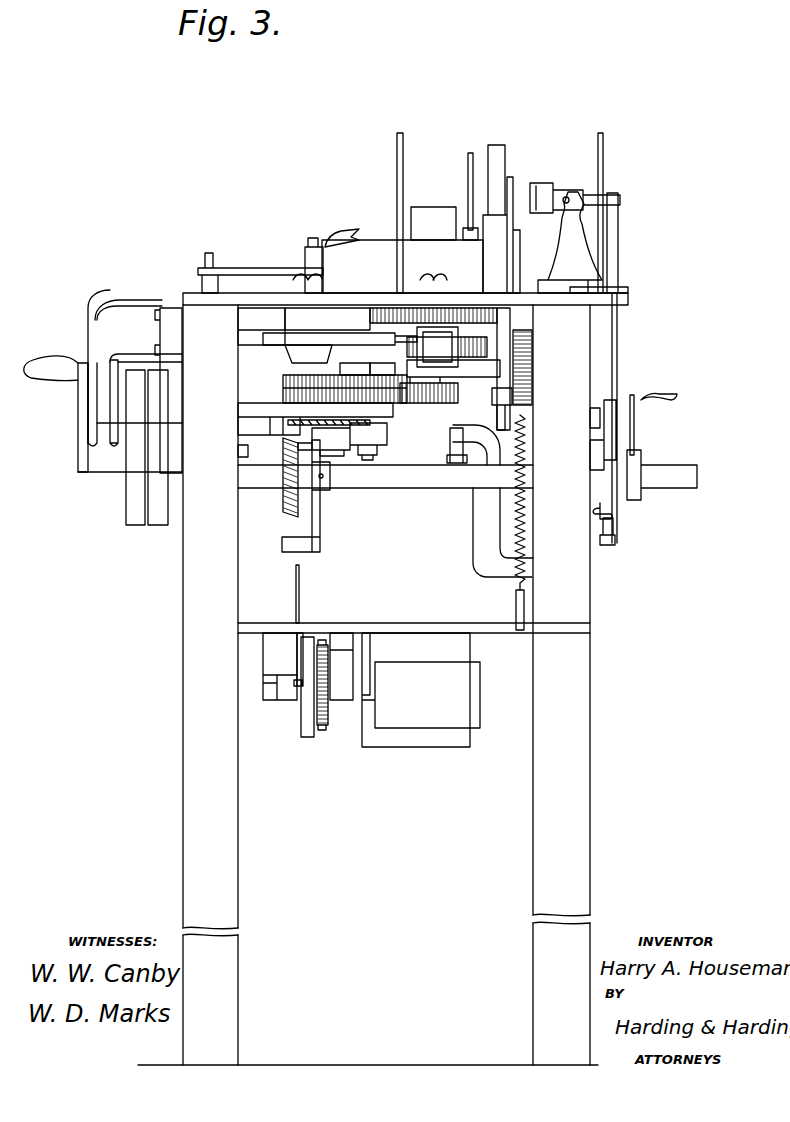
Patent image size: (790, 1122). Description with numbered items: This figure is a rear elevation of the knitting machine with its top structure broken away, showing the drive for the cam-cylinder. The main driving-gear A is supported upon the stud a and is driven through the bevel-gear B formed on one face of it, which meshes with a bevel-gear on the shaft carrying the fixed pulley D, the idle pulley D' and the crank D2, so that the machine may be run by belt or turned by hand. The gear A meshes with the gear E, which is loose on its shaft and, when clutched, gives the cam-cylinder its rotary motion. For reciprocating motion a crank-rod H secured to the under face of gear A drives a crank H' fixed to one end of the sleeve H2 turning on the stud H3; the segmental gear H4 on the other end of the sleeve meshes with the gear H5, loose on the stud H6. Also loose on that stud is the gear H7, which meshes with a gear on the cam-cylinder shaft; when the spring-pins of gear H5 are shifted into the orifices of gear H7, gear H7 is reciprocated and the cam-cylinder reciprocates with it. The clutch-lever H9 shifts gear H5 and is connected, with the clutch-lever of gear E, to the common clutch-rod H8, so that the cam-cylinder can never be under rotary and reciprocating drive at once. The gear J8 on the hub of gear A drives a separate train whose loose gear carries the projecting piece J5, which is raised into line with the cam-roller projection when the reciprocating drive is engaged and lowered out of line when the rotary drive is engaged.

The main driving-gear A is at (418, 405).
The bevel-gear B is at (404, 409).
The fixed pulley D is at (156, 468).
The idle pulley D' is at (121, 468).
The crank D2 is at (80, 410).
The gear E is at (414, 386).
The crank-rod H is at (318, 530).
The crank H' is at (315, 419).
The sleeve H2 is at (286, 386).
The stud H3 is at (264, 317).
The segmental gear H4 is at (345, 338).
The gear H5 is at (491, 338).
The stud H6 is at (450, 390).
The gear H7 is at (458, 308).
The clutch-rod H8 is at (528, 364).
The clutch-lever H9 is at (494, 396).
The projecting piece J5 is at (378, 385).
The gear J8 is at (352, 385).
The stud a is at (308, 355).